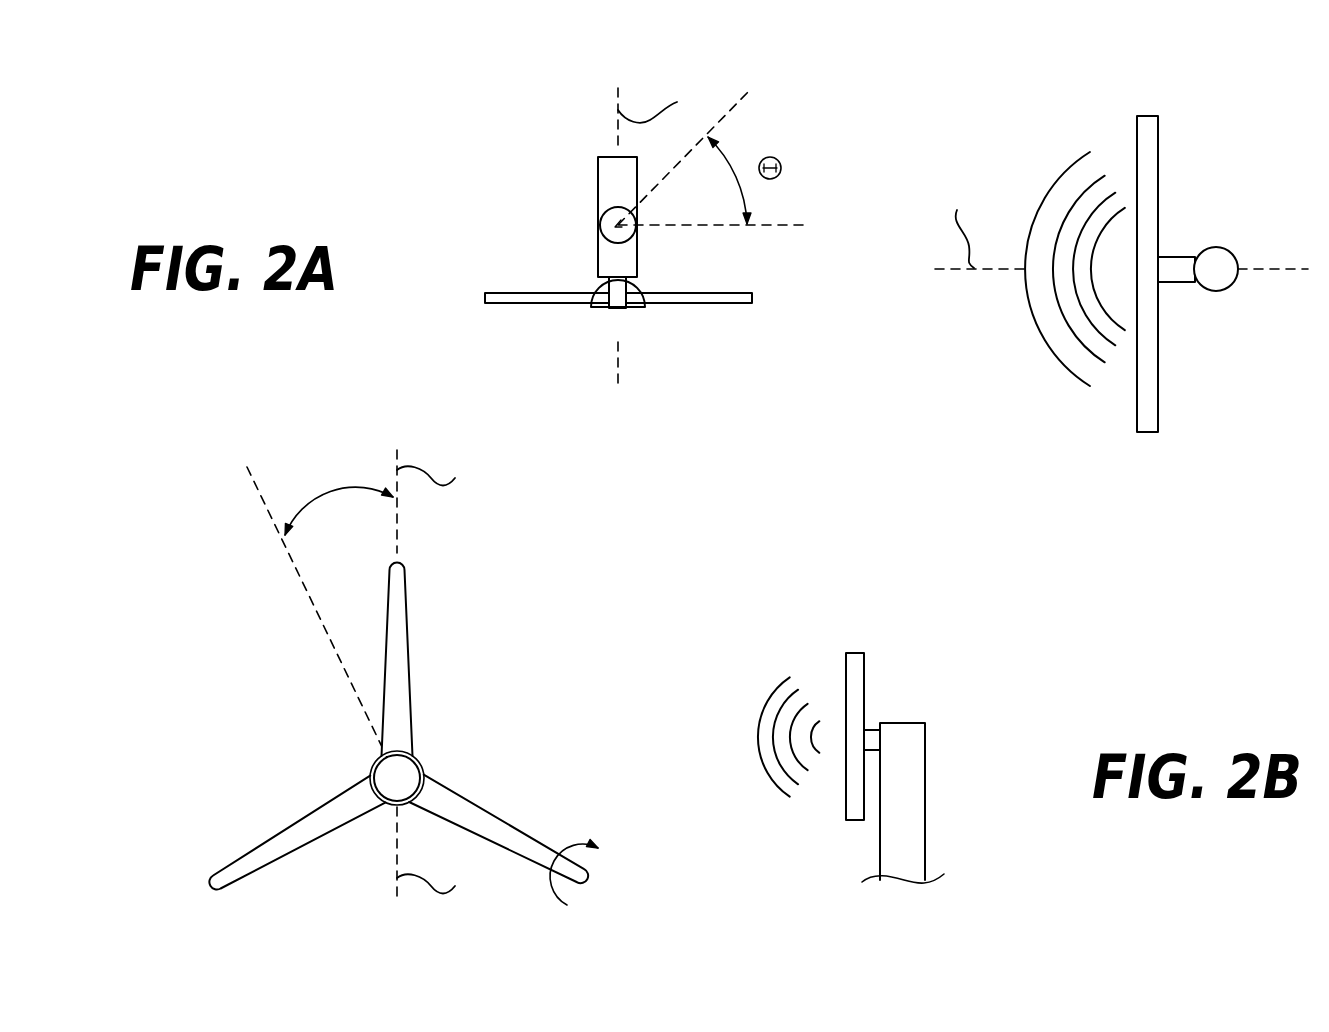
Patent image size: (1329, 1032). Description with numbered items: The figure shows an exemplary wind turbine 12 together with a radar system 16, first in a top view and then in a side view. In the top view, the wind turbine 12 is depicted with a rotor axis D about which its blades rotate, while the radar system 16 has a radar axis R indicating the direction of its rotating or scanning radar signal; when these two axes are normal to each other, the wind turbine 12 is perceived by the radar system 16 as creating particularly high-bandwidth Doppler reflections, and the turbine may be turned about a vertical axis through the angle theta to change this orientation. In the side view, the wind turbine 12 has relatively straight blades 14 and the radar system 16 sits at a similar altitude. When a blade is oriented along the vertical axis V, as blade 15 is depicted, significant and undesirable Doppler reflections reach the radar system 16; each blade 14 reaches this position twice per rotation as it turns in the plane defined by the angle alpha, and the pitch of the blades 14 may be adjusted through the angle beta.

In FIG. 2A, the wind turbine 12 is at (543, 88).
In FIG. 2B, the wind turbine 12 is at (351, 677).
In FIG. 2B, the blades 14 is at (283, 832).
In FIG. 2B, the blade 15 is at (410, 670).
In FIG. 2A, the radar system 16 is at (1143, 90).
In FIG. 2B, the radar system 16 is at (818, 612).